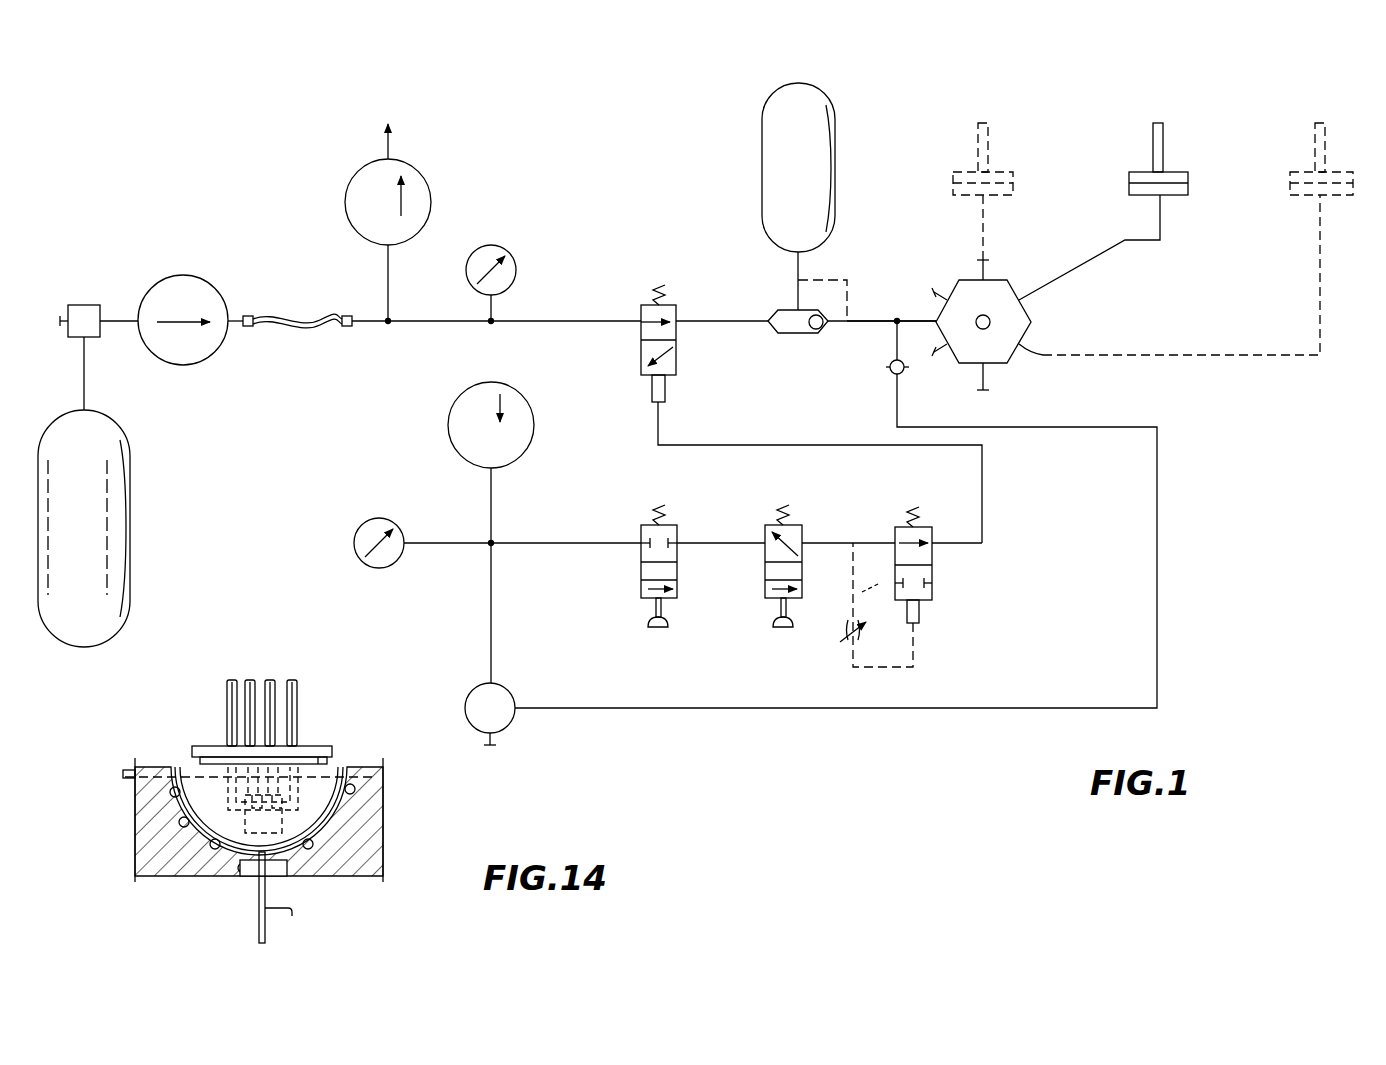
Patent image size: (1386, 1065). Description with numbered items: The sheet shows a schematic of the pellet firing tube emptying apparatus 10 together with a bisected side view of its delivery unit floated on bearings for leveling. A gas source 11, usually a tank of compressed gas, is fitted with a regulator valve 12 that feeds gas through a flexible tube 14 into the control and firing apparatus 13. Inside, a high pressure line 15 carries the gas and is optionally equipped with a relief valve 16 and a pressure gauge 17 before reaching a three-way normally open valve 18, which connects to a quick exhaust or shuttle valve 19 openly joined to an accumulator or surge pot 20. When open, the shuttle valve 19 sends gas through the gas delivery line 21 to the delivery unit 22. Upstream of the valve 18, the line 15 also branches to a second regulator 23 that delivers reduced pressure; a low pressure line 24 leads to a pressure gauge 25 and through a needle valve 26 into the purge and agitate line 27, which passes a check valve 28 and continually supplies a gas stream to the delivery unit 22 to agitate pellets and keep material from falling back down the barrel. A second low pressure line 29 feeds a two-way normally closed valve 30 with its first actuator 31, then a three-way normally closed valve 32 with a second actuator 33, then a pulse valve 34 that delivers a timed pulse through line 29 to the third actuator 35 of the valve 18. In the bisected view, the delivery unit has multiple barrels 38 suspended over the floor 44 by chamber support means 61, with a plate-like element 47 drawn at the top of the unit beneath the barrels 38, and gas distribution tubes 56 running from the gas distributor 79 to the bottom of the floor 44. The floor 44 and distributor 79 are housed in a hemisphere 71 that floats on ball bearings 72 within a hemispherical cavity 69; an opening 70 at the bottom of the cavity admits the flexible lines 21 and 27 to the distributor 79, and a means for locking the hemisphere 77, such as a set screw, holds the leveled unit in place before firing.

In FIG. 1, the pellet firing tube emptying apparatus 10 is at (1318, 453).
In FIG. 1, the gas source 11 is at (128, 577).
In FIG. 1, the regulator valve 12 is at (182, 275).
In FIG. 1, the control and firing apparatus 13 is at (345, 462).
In FIG. 1, the flexible tube 14 is at (300, 315).
In FIG. 1, the high pressure line 15 is at (433, 328).
In FIG. 1, the relief valve 16 is at (360, 172).
In FIG. 1, the pressure gauge 17 is at (505, 255).
In FIG. 1, the three-way normally open valve 18 is at (680, 360).
In FIG. 1, the quick exhaust or shuttle valve 19 is at (808, 333).
In FIG. 1, the accumulator or surge pot 20 is at (762, 150).
In FIG. 1, the gas delivery line 21 is at (878, 320).
In FIG. 14, the gas delivery line 21 is at (258, 924).
In FIG. 1, the delivery unit 22 is at (1222, 70).
In FIG. 1, the second regulator 23 is at (536, 428).
In FIG. 1, the low pressure line 24 is at (495, 507).
In FIG. 1, the pressure gauge 25 is at (383, 568).
In FIG. 1, the needle valve 26 is at (470, 693).
In FIG. 1, the purge and agitate line 27 is at (1142, 425).
In FIG. 14, the purge and agitate line 27 is at (282, 910).
In FIG. 1, the check valve 28 is at (891, 372).
In FIG. 1, the second low pressure line 29 is at (558, 545).
In FIG. 1, the two-way normally closed valve 30 is at (641, 575).
In FIG. 1, the first actuator 31 is at (655, 630).
In FIG. 1, the three-way normally closed valve 32 is at (765, 573).
In FIG. 1, the second actuator 33 is at (782, 628).
In FIG. 1, the pulse valve 34 is at (935, 578).
In FIG. 1, the third actuator 35 is at (650, 392).
In FIG. 14, the barrels 38 is at (227, 702).
In FIG. 14, the chamber bottom or floor 44 is at (360, 777).
In FIG. 14, the plate 47 is at (332, 750).
In FIG. 14, the gas distribution tubes 56 is at (228, 790).
In FIG. 14, the chamber support means 61 is at (318, 757).
In FIG. 14, the cavity 69 is at (240, 826).
In FIG. 14, the opening 70 is at (245, 874).
In FIG. 14, the hemisphere 71 is at (172, 790).
In FIG. 14, the ball bearings 72 is at (240, 818).
In FIG. 14, the means for locking the hemisphere 77 is at (178, 772).
In FIG. 1, the gas distributor 79 is at (1010, 363).
In FIG. 14, the gas distributor 79 is at (176, 860).